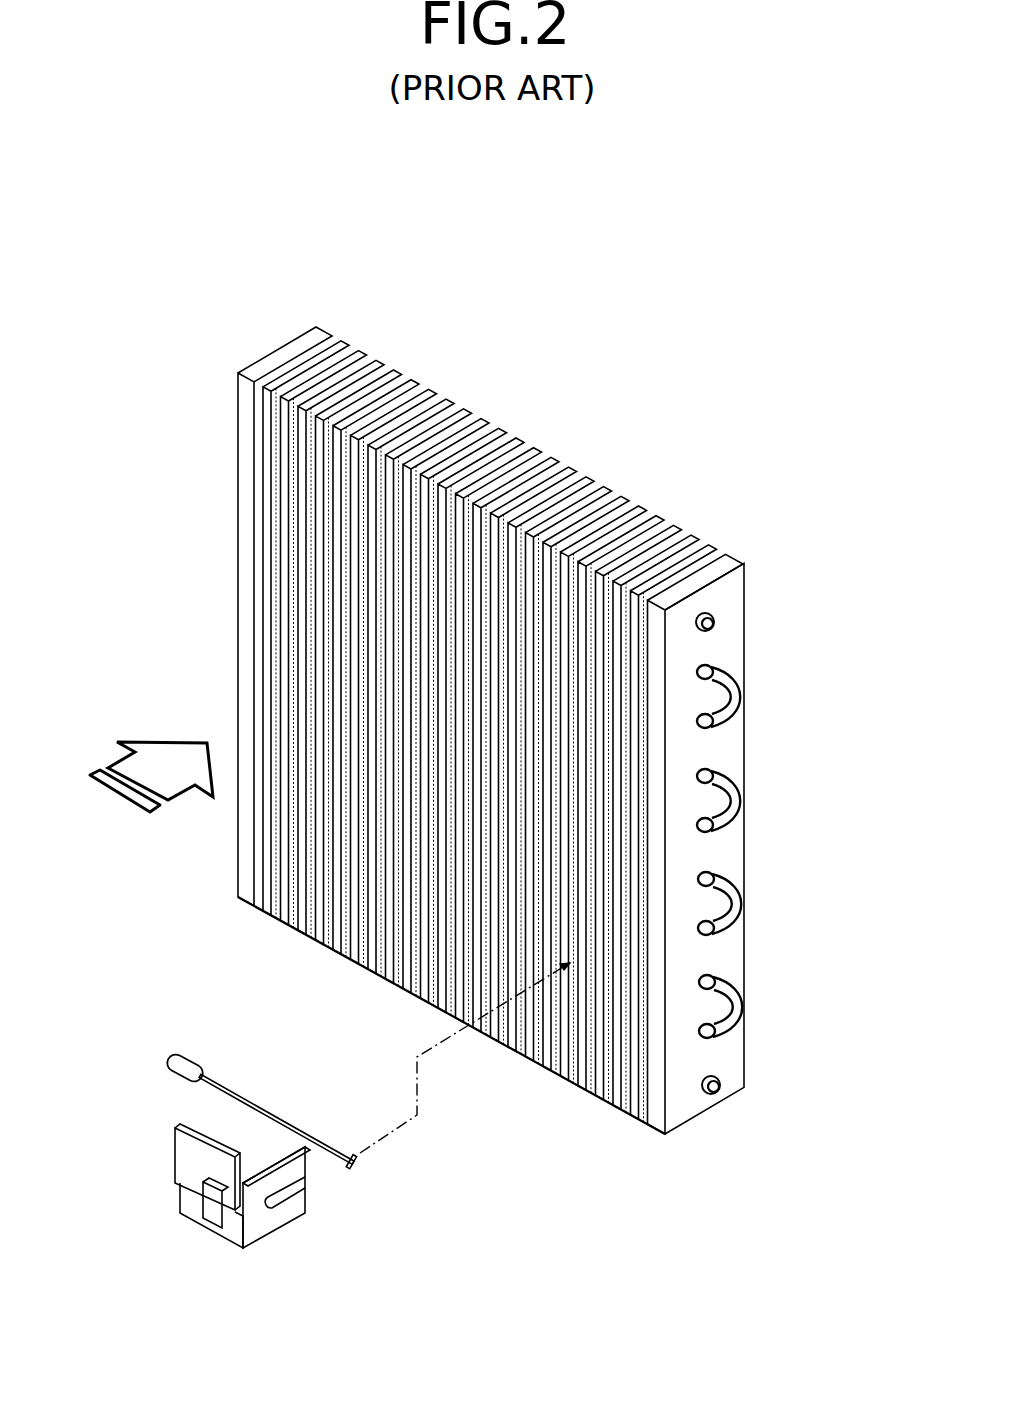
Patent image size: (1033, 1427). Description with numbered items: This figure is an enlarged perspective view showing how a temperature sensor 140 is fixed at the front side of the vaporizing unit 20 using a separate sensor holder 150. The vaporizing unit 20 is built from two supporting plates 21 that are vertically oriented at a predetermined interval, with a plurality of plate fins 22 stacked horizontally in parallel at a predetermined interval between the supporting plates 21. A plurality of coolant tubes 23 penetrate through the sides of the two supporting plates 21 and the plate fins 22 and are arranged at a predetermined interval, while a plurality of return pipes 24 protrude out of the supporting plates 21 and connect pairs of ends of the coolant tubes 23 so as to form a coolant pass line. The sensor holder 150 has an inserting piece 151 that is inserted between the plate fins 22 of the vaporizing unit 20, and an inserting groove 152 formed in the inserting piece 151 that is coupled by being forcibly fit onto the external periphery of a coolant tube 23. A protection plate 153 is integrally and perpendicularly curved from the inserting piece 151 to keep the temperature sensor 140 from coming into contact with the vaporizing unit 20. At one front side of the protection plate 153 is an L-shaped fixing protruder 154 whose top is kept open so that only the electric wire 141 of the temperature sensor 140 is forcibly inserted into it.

The vaporizing unit 20 is at (362, 933).
The supporting plate 21 is at (276, 356).
The plate fin 22 is at (549, 462).
The coolant tube 23 is at (717, 626).
The return pipe 24 is at (733, 814).
The temperature sensor 140 is at (178, 1056).
The electric wire 141 is at (360, 1170).
The sensor holder 150 is at (226, 1239).
The inserting piece 151 is at (283, 1150).
The inserting groove 152 is at (306, 1196).
The protection plate 153 is at (188, 1157).
The fixing protruder 154 is at (212, 1203).